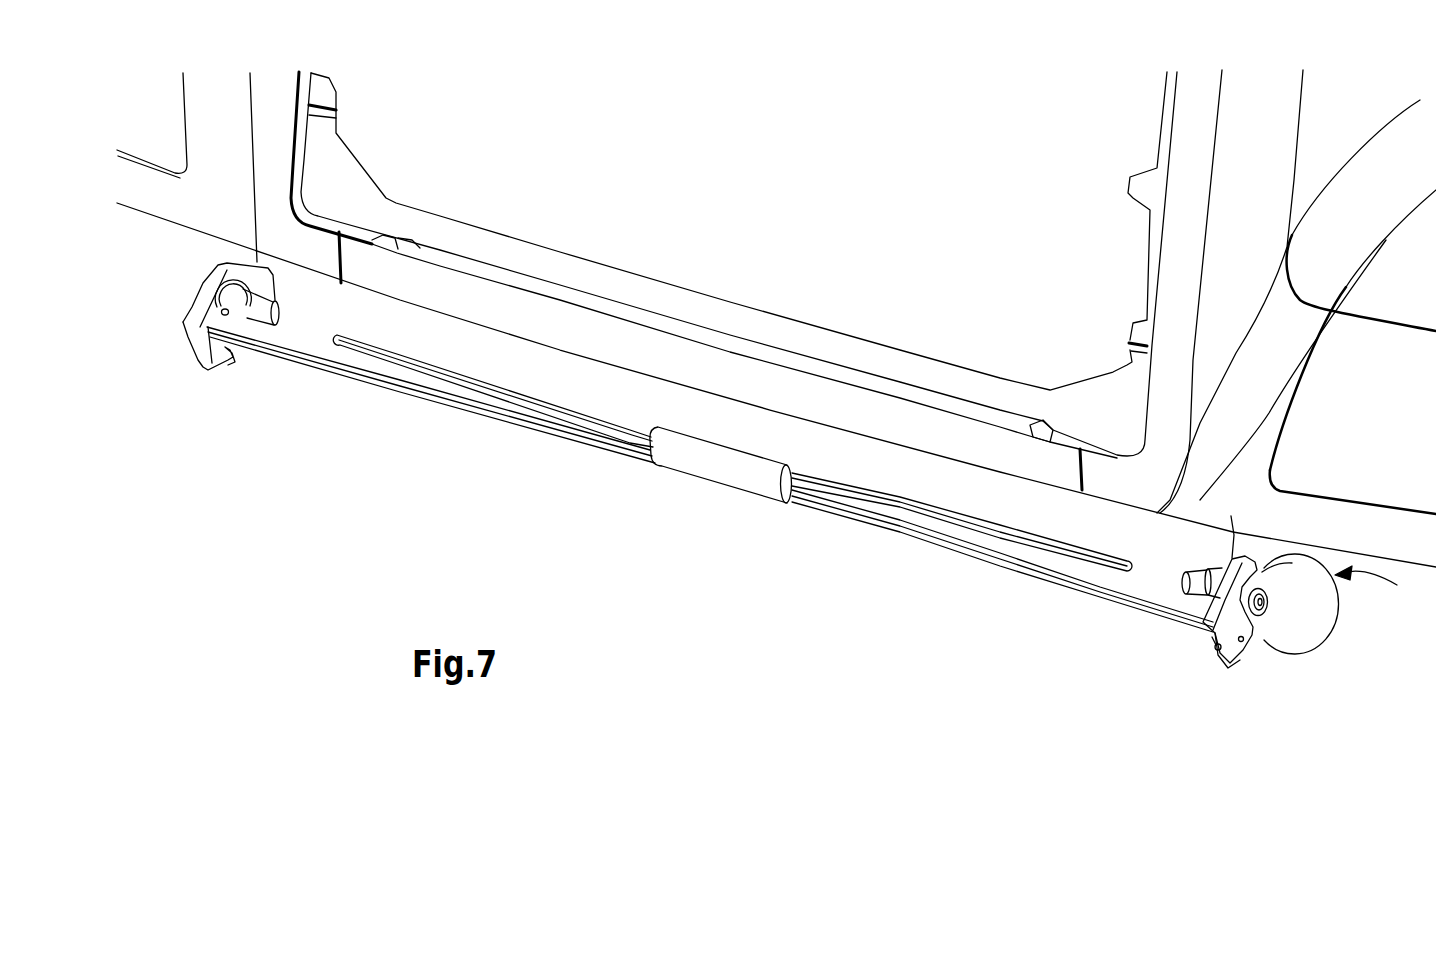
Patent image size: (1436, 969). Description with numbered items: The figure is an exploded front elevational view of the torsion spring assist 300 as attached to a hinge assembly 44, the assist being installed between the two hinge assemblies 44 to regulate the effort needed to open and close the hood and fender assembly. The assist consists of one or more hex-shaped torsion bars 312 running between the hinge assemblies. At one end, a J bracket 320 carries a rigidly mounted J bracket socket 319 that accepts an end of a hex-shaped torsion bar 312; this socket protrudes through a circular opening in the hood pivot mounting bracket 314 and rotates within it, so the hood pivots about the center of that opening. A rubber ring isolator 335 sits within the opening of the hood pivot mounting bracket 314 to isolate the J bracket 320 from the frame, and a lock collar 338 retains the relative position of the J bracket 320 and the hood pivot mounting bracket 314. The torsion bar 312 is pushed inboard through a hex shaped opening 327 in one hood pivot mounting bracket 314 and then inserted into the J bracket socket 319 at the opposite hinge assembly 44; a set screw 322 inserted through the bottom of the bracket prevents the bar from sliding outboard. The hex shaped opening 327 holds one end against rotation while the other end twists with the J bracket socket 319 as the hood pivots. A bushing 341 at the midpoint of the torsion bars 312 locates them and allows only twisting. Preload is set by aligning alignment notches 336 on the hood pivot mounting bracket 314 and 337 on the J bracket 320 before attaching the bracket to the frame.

The torsion spring assist 300 is at (791, 533).
The hex-shaped torsion bar 312 is at (409, 365).
The hood pivot mounting bracket 314 is at (1276, 475).
The J bracket socket 319 is at (279, 315).
The J bracket 320 is at (1281, 606).
The set screw 322 is at (1219, 652).
The hex shaped opening 327 is at (209, 342).
The rubber ring isolator 335 is at (213, 300).
The alignment notch 336 is at (1255, 562).
The alignment notch 337 is at (1257, 567).
The lock collar 338 is at (237, 290).
The bushing 341 is at (697, 457).
The hinge assembly 44 is at (1379, 582).